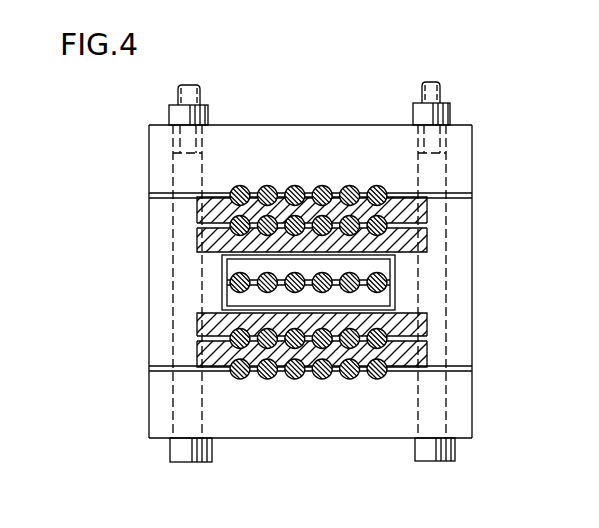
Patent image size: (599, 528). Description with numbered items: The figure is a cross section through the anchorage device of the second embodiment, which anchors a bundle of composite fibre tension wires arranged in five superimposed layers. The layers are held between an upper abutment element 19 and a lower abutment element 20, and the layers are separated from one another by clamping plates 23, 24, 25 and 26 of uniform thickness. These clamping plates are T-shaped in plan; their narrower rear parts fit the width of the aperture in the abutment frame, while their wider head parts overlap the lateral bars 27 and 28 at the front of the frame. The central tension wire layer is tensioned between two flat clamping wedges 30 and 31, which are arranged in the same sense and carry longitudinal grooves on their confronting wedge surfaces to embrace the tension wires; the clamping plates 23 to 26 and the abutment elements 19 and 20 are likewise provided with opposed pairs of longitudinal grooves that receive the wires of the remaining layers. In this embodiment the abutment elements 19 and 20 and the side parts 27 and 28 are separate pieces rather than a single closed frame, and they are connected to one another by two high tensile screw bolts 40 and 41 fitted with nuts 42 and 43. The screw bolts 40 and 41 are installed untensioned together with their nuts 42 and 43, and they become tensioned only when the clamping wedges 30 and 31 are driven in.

The abutment element 19 is at (293, 138).
The abutment element 20 is at (300, 423).
The clamping plate 23 is at (212, 213).
The clamping plate 24 is at (213, 243).
The clamping plate 25 is at (207, 327).
The clamping plate 26 is at (207, 355).
The lateral bar 27 is at (160, 283).
The lateral bar 28 is at (465, 282).
The clamping wedge 30 is at (390, 262).
The clamping wedge 31 is at (390, 298).
The screw bolt 40 is at (188, 173).
The screw bolt 41 is at (433, 167).
The nut 42 is at (170, 118).
The nut 43 is at (450, 112).